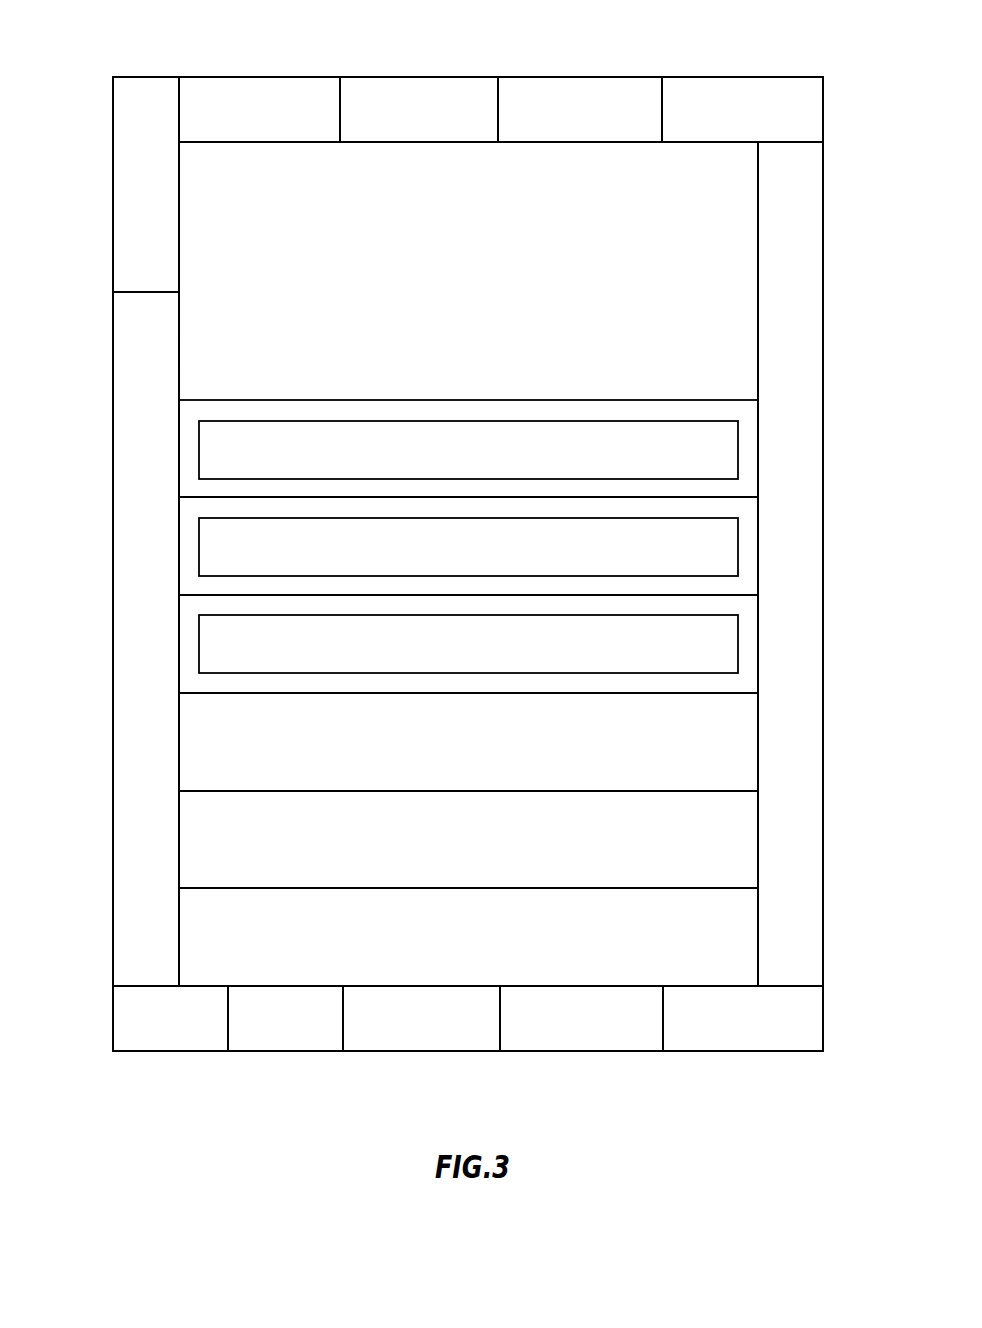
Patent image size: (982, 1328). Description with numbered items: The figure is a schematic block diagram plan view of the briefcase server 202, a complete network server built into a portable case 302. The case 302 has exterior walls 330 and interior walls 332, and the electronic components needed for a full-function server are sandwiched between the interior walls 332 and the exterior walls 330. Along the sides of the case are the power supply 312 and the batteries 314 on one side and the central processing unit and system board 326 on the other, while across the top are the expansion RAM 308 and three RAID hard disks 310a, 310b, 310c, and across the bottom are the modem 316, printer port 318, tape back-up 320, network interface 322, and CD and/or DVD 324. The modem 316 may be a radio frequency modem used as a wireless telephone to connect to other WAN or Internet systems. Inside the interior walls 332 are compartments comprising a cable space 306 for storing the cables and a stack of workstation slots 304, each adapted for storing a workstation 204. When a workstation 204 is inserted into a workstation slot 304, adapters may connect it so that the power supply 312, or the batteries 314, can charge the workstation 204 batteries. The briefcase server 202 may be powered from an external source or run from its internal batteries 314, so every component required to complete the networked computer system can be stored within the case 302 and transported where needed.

The briefcase server 202 is at (699, 1139).
The workstation 204 is at (700, 462).
The case 302 is at (114, 1053).
The workstation slot 304 is at (607, 400).
The cable space 306 is at (700, 287).
The expansion random access memory (RAM) 308 is at (680, 88).
The RAID hard disk 310a is at (525, 88).
The RAID hard disk 310b is at (376, 87).
The RAID hard disk 310c is at (224, 87).
The power supply 312 is at (120, 175).
The batteries 314 is at (145, 405).
The modem 316 is at (187, 1043).
The printer port 318 is at (337, 1045).
The tape back-up 320 is at (443, 1043).
The network interface 322 is at (583, 1045).
The CD and/or DVD 324 is at (745, 1043).
The central processing unit and system board 326 is at (812, 213).
The exterior walls 330 is at (285, 77).
The interior walls 332 is at (280, 143).